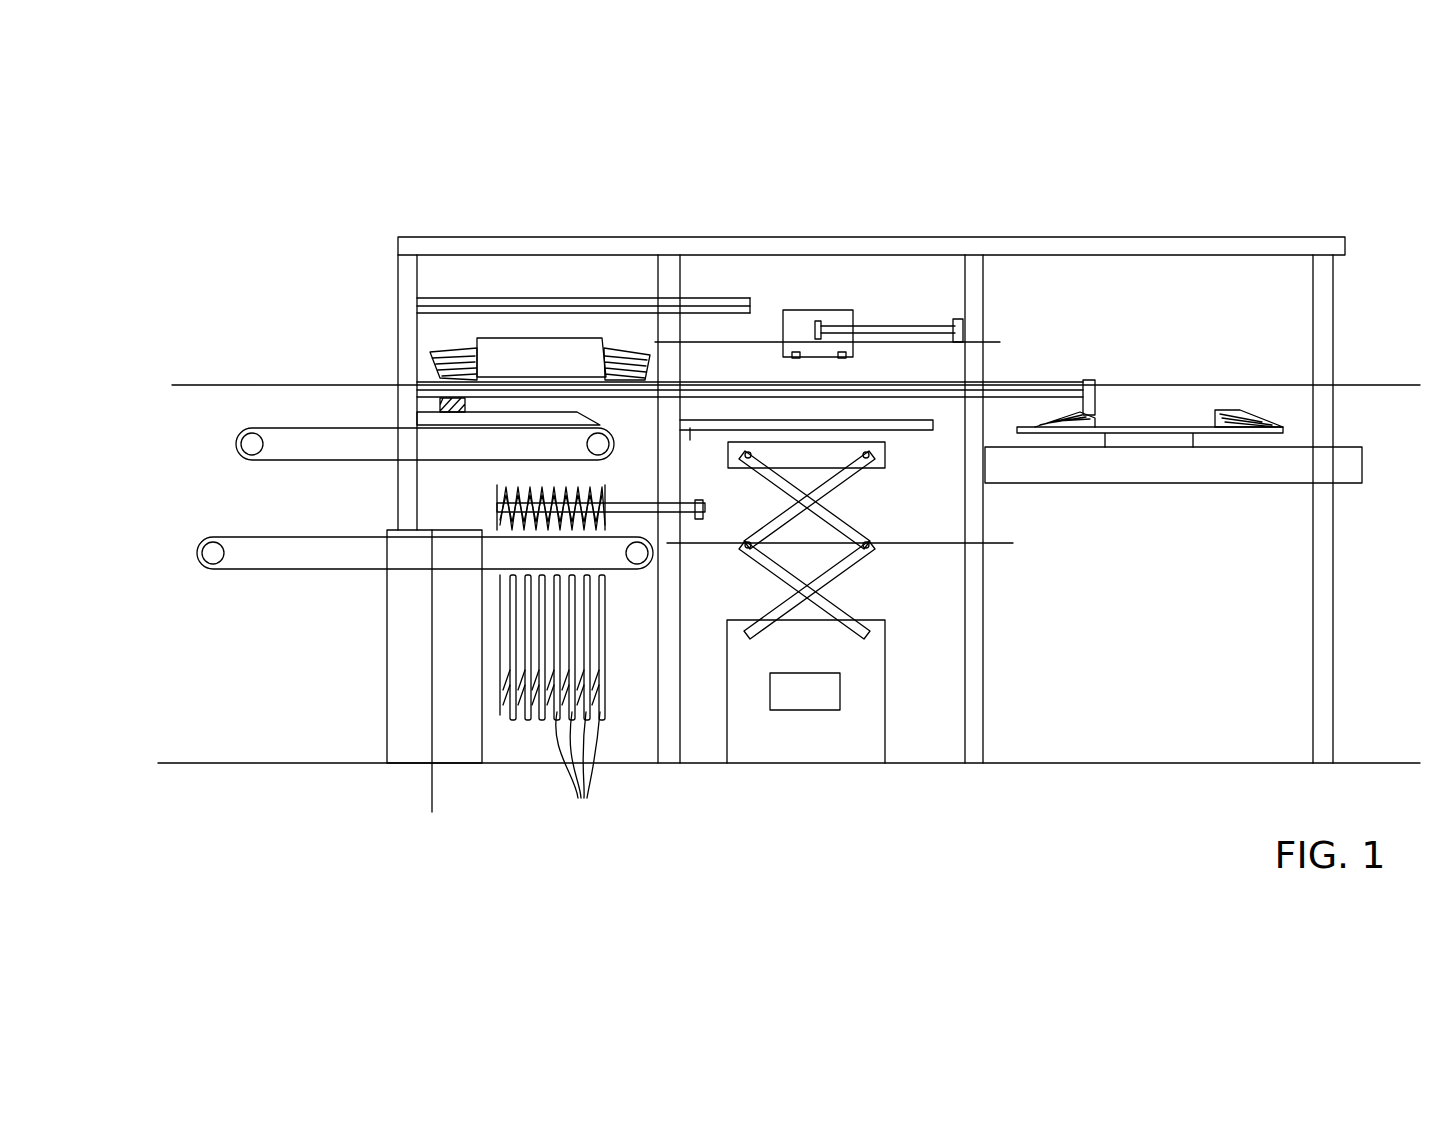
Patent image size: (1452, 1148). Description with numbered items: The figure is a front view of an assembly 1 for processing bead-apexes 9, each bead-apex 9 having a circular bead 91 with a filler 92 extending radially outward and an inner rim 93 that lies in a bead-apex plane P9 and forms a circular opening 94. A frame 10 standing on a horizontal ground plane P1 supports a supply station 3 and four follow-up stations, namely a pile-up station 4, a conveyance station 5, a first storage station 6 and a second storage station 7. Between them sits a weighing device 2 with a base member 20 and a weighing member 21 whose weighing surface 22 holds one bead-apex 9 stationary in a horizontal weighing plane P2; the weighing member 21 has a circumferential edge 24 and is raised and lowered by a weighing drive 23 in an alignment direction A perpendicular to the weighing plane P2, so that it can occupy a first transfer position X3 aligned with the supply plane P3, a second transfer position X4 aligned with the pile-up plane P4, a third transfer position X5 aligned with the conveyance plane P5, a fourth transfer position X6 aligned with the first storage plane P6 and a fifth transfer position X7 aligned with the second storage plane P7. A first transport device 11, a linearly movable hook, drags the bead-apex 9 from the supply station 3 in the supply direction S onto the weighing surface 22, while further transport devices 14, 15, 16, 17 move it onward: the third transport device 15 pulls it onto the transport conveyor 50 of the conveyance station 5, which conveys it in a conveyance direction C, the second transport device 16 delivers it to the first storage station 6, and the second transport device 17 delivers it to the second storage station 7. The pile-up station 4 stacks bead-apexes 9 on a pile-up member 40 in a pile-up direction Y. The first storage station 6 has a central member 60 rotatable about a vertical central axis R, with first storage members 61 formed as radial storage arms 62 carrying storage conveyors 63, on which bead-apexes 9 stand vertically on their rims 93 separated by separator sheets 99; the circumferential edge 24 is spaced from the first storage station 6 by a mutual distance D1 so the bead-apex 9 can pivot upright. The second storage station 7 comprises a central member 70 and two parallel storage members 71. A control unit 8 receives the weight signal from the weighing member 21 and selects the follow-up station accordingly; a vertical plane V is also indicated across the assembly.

The assembly 1 is at (757, 316).
The weighing device 2 is at (795, 792).
The supply station 3 is at (1138, 432).
The pile-up station 4 is at (443, 360).
The conveyance station 5 is at (226, 477).
The first storage station 6 is at (353, 634).
The second storage station 7 is at (812, 310).
The control unit 8 is at (805, 691).
The bead-apex 9 is at (550, 345).
The frame 10 is at (1108, 240).
The first transport device 11 is at (1088, 380).
The further transport device 14 is at (740, 298).
The third transport device 15 is at (410, 398).
The second transport device 16 is at (700, 520).
The second transport device 17 is at (967, 318).
The base member 20 is at (840, 626).
The weighing member 21 is at (925, 423).
The weighing surface 22 is at (900, 417).
The weighing drive 23 is at (875, 548).
The circumferential edge 24 is at (690, 430).
The pile-up member 40 is at (618, 338).
The transport conveyor 50 is at (240, 430).
The central member 60 is at (400, 750).
The first storage member 61 is at (497, 540).
The storage arm 62 is at (300, 569).
The storage conveyor 63 is at (217, 570).
The central member 70 is at (848, 312).
The storage member 71 is at (875, 323).
The bead 91 is at (1235, 420).
The filler 92 is at (1270, 414).
The inner rim 93 is at (1212, 417).
The circular opening 94 is at (1115, 415).
The separator sheet 99 is at (578, 766).
The alignment direction A is at (932, 632).
The conveyance direction C is at (470, 404).
The mutual distance D1 is at (620, 782).
The central axis R is at (432, 685).
The supply direction S is at (1009, 347).
The vertical plane V is at (217, 383).
The pile-up direction Y is at (551, 213).
The ground plane P1 is at (1135, 767).
The weighing plane P2 is at (738, 417).
The supply plane P3 is at (1170, 413).
The pile-up plane P4 is at (492, 333).
The conveyance plane P5 is at (293, 425).
The first storage plane P6 is at (283, 537).
The second storage plane P7 is at (958, 320).
The bead-apex plane P9 is at (500, 623).
The first transfer position X3 is at (1000, 447).
The second transfer position X4 is at (712, 305).
The third transfer position X5 is at (636, 430).
The fourth transfer position X6 is at (1007, 545).
The fifth transfer position X7 is at (903, 347).